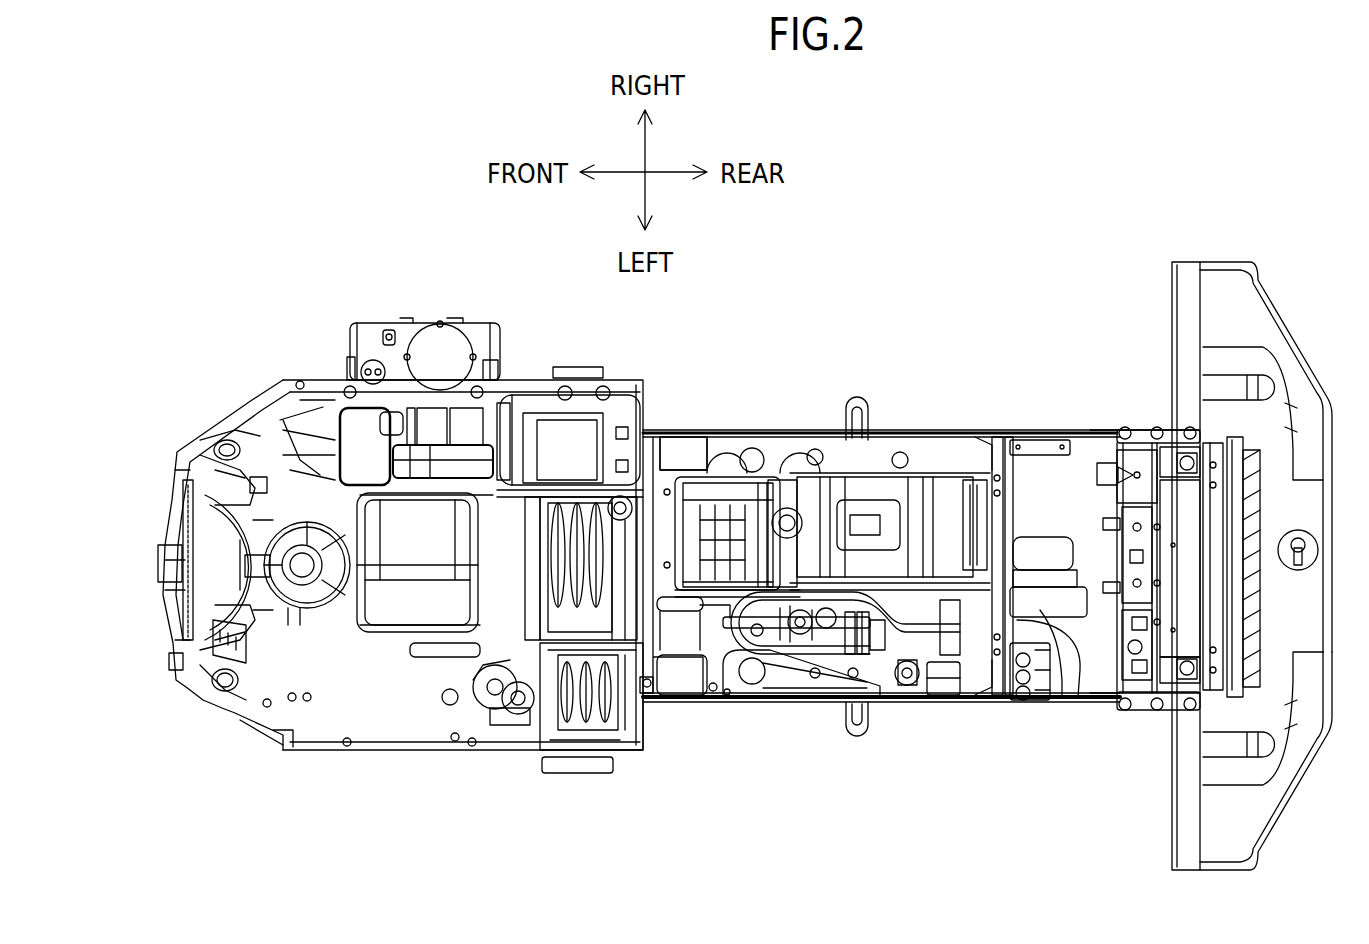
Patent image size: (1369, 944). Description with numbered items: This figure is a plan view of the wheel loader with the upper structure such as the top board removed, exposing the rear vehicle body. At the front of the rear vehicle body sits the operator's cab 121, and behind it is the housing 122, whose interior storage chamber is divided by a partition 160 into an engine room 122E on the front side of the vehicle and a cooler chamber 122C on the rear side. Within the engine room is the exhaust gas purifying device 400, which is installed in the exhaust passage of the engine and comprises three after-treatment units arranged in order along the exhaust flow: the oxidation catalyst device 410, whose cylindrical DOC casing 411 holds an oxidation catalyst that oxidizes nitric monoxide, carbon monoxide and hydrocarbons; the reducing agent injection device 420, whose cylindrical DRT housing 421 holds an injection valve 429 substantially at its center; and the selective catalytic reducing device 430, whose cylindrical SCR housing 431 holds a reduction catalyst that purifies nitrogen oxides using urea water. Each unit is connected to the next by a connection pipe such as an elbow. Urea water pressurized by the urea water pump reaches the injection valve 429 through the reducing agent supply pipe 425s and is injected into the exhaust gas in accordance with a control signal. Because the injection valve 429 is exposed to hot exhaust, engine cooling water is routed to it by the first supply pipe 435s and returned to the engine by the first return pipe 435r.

The operator's cab 121 is at (258, 393).
The housing 122 is at (712, 408).
The engine room 122E is at (932, 452).
The cooler chamber 122C is at (1067, 487).
The partition 160 is at (1017, 448).
The exhaust gas purifying device 400 is at (737, 627).
The oxidation catalyst device 410 is at (700, 600).
The DOC casing 411 is at (648, 630).
The reducing agent injection device 420 is at (870, 665).
The DRT housing 421 is at (848, 667).
The reducing agent supply pipe 425s is at (850, 480).
The injection valve 429 is at (822, 640).
The selective catalytic reducing device 430 is at (932, 625).
The SCR housing 431 is at (977, 620).
The first return pipe 435r is at (892, 672).
The first supply pipe 435s is at (757, 625).